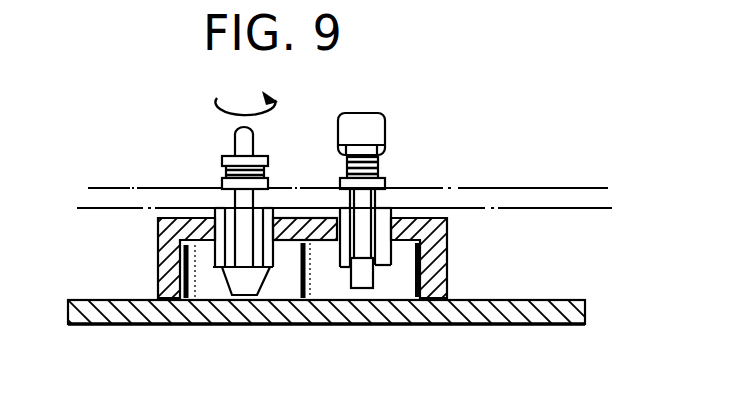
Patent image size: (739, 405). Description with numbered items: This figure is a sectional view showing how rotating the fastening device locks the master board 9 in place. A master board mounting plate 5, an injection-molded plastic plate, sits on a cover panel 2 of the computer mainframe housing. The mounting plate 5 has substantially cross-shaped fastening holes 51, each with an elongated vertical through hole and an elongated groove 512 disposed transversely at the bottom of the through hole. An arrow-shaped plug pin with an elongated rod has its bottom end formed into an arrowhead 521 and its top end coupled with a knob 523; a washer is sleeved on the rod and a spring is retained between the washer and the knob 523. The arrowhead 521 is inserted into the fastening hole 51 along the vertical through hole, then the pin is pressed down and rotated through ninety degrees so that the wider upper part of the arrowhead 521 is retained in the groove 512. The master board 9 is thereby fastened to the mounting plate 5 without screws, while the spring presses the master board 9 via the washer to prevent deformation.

The cover panel 2 is at (112, 326).
The master board mounting plate 5 is at (443, 257).
The master board 9 is at (516, 195).
The fastening hole 51 is at (389, 206).
The elongated groove 512 is at (265, 270).
The arrowhead 521 is at (245, 282).
The knob 523 is at (235, 150).